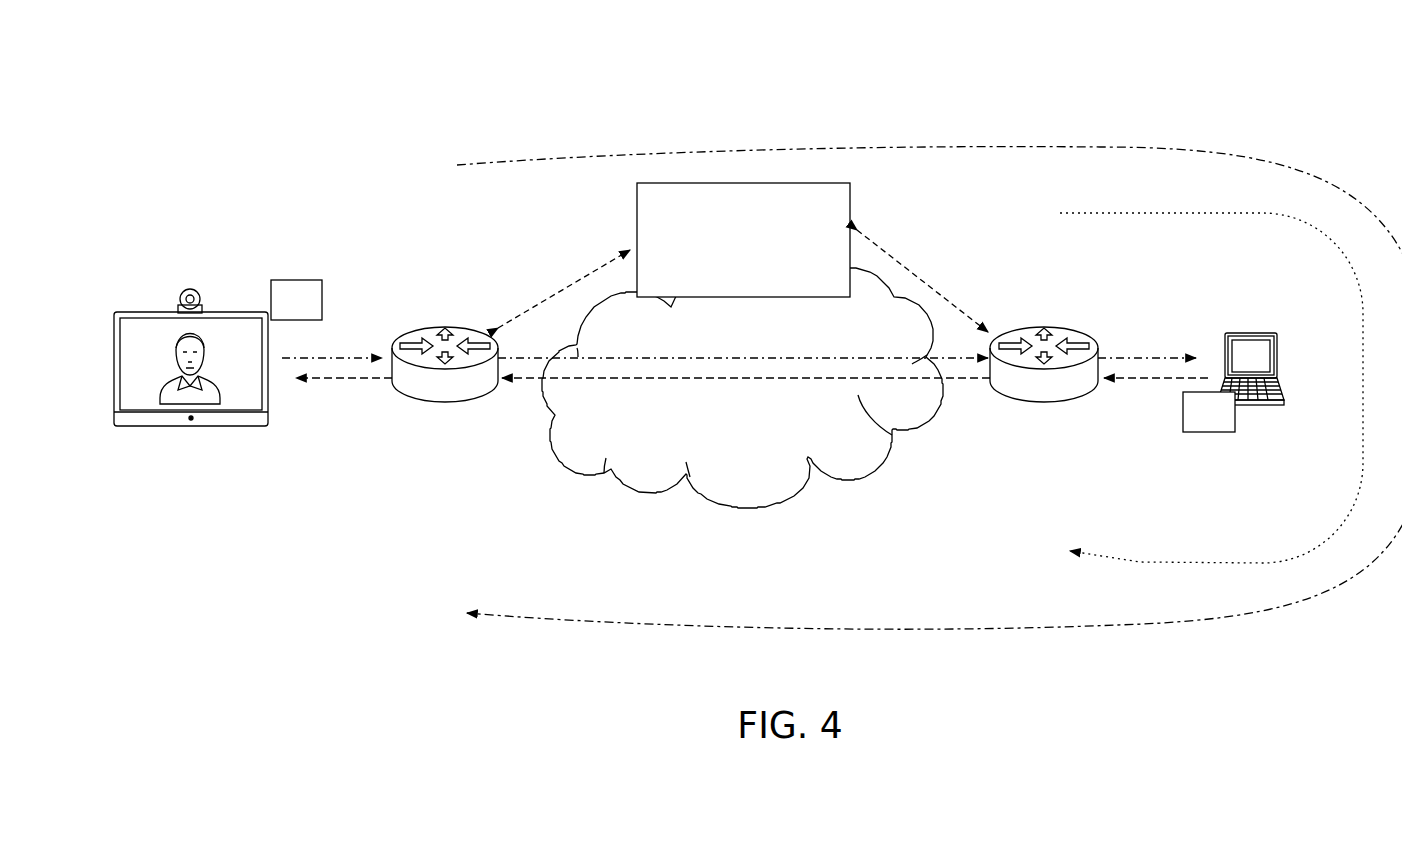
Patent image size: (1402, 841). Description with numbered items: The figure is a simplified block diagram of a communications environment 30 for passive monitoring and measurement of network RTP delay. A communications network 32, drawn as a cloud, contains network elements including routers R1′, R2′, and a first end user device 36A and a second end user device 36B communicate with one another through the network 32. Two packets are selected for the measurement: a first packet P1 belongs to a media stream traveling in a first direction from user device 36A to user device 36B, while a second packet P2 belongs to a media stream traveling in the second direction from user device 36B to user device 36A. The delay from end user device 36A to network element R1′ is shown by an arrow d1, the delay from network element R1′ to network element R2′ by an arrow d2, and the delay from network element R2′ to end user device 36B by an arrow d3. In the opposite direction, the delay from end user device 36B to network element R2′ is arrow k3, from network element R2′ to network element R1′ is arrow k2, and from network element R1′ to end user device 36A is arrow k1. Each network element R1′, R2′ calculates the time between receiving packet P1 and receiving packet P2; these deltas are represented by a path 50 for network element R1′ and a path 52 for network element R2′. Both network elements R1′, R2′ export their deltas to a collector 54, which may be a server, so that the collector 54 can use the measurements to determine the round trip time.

The communications environment 30 is at (452, 115).
The path representing Delta_in_R1' 50 is at (1050, 142).
The path representing Delta_in_R2' 52 is at (1113, 556).
The collector 54 is at (637, 212).
The communications network 32 is at (643, 470).
The first end user device 36A is at (190, 289).
The second end user device 36B is at (1246, 333).
The first packet P1 is at (305, 280).
The second packet P2 is at (1207, 433).
The first network element (router) R1′ is at (468, 338).
The second network element (router) R2′ is at (1028, 333).
The delay from end user device 36A to network element R1' d1 is at (366, 354).
The delay from network element R1' to network element R2' d2 is at (733, 356).
The delay from network element R2' to end user device 36B d3 is at (1162, 356).
The delay from network element R1' to end user device 36A k1 is at (366, 382).
The delay from network element R2' to network element R1' k2 is at (732, 381).
The delay from end user device 36B to network element R2' k3 is at (1160, 381).